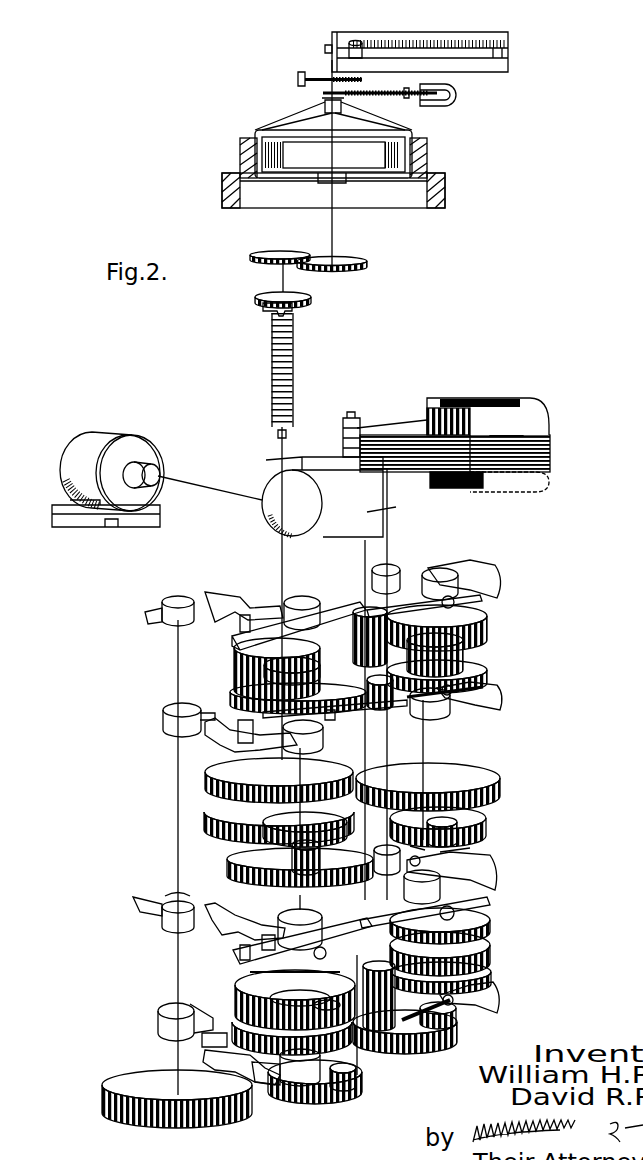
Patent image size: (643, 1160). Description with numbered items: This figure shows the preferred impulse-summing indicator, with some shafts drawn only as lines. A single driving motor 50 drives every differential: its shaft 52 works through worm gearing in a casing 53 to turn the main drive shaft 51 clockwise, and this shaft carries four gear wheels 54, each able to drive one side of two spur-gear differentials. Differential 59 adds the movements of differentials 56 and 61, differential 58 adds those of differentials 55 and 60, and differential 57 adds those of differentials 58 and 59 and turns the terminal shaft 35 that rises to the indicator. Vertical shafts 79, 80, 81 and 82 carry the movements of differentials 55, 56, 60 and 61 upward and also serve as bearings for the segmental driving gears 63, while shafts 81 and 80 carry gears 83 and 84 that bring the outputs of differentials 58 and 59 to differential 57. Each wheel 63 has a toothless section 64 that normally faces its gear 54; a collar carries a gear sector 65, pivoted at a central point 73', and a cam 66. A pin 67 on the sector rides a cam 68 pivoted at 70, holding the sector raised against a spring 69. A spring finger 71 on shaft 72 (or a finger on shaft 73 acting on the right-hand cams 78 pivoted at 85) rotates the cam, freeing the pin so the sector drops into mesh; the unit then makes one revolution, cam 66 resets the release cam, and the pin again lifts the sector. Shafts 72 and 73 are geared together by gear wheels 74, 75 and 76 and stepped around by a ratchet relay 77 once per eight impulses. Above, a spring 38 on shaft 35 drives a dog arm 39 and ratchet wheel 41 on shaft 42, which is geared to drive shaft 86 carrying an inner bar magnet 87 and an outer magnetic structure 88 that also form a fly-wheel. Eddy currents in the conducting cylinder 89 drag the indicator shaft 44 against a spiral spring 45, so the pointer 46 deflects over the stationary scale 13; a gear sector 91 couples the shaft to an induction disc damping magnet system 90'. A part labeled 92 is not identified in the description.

The stationary scale 13 is at (508, 34).
The pointer 46 is at (353, 46).
The spiral spring 45 is at (321, 78).
The indicator shaft 44 is at (323, 94).
The gear sector 91 is at (376, 96).
The induction disc damping magnet system 90' is at (454, 98).
The cylindrical member 89 is at (258, 134).
The inner permanent bar magnet 87 is at (332, 155).
The outer magnetic structure 88 is at (428, 171).
The drive shaft 86 is at (334, 246).
The shaft 42 is at (276, 272).
The ratchet wheel 41 is at (312, 298).
The dog arm 39 is at (268, 310).
The spring 38 is at (295, 364).
The terminal shaft 35 is at (282, 566).
The ratchet relay 77 is at (502, 400).
The contact 92 is at (405, 424).
The driving motor 50 is at (68, 456).
The motor shaft 52 is at (212, 490).
The casing 53 is at (270, 508).
The main drive shaft 51 is at (365, 551).
The shaft 73 is at (403, 684).
The vertical shaft 80 is at (425, 748).
The shaft 72 is at (177, 945).
The gear sector 65 is at (322, 604).
The cam 68 is at (218, 594).
The spring finger 71 is at (148, 616).
The differential 55 is at (236, 669).
The driving gear 63 is at (491, 972).
The vertical shaft 79 is at (300, 762).
The differential 57 is at (216, 804).
The differential 58 is at (228, 860).
The gear 83 is at (255, 912).
The vertical shaft 81 is at (298, 897).
The cam 66 is at (456, 712).
The pivot 70 is at (262, 938).
The pin 67 is at (240, 955).
The spring 69 is at (250, 974).
The differential 60 is at (234, 988).
The toothless section 64 is at (332, 915).
The gear wheel 75 is at (325, 1084).
The gear wheel 74 is at (192, 1116).
The central pivot point 73' is at (363, 1020).
The cam 78 is at (478, 574).
The differential 56 is at (490, 641).
The gear wheel 54 is at (390, 1025).
The gear 84 is at (485, 782).
The differential 59 is at (486, 816).
The vertical shaft 82 is at (425, 849).
The pivot 85 is at (458, 858).
The differential 61 is at (490, 947).
The gear wheel 76 is at (416, 1040).